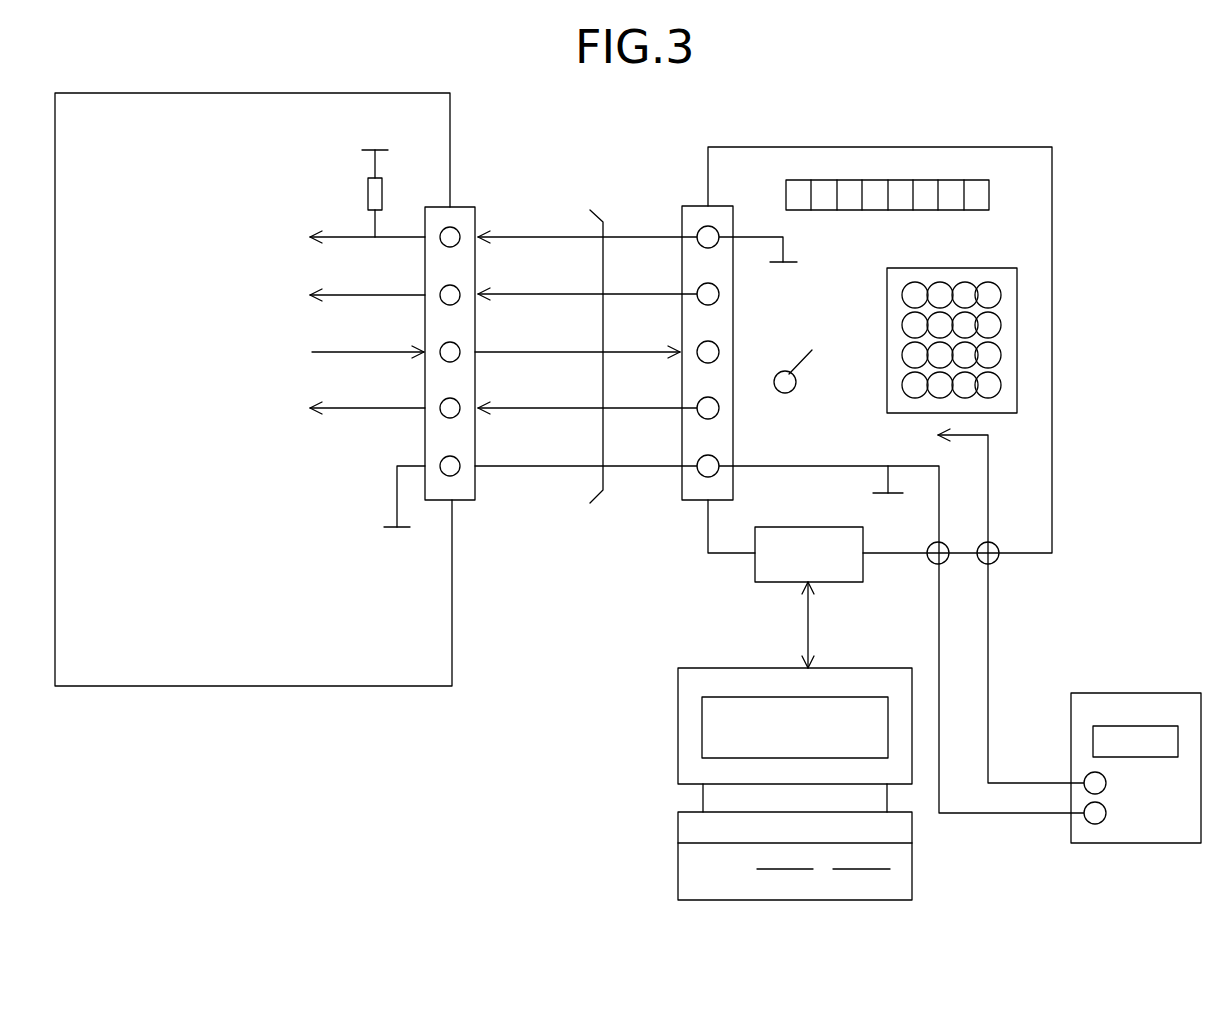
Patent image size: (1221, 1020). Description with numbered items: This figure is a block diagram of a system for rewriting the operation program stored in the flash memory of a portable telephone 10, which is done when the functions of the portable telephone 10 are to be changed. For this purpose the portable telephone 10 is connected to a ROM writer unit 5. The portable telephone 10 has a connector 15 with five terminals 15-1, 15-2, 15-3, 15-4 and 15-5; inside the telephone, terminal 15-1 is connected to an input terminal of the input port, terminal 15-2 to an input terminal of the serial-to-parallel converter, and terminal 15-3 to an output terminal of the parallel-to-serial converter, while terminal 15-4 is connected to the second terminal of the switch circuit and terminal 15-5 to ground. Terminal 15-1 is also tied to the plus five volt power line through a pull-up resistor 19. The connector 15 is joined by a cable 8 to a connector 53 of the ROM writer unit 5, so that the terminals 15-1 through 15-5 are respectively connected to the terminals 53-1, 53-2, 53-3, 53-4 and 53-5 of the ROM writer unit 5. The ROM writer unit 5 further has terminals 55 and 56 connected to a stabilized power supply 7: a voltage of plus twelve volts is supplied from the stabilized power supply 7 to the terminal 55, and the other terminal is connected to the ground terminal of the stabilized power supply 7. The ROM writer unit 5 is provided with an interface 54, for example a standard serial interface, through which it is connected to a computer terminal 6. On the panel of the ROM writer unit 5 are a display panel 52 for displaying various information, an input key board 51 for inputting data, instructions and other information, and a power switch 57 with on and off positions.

The ROM writer unit 5 is at (960, 147).
The computer terminal 6 is at (912, 880).
The stabilized power supply 7 is at (1100, 693).
The cable 8 is at (590, 212).
The portable telephone 10 is at (410, 687).
The connector 15 is at (455, 207).
The terminal 15-1 is at (460, 233).
The terminal 15-2 is at (460, 291).
The terminal 15-3 is at (460, 348).
The terminal 15-4 is at (460, 404).
The terminal 15-5 is at (460, 462).
The pull-up resistor 19 is at (384, 195).
The input key board 51 is at (985, 268).
The display panel 52 is at (990, 190).
The connector 53 is at (700, 205).
The terminal 53-1 is at (697, 243).
The terminal 53-2 is at (697, 300).
The terminal 53-3 is at (697, 358).
The terminal 53-4 is at (697, 414).
The terminal 53-5 is at (697, 472).
The interface 54 is at (772, 583).
The terminal 55 is at (998, 561).
The terminal 56 is at (928, 562).
The power switch 57 is at (760, 362).